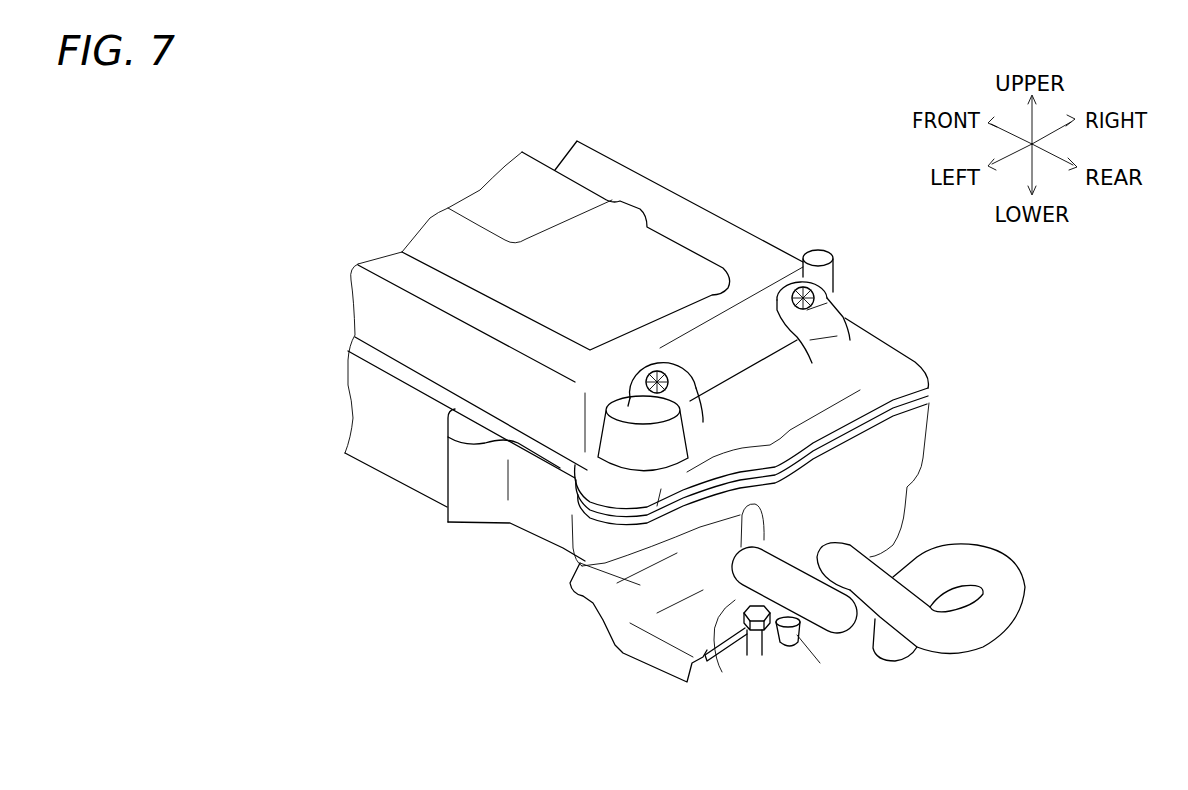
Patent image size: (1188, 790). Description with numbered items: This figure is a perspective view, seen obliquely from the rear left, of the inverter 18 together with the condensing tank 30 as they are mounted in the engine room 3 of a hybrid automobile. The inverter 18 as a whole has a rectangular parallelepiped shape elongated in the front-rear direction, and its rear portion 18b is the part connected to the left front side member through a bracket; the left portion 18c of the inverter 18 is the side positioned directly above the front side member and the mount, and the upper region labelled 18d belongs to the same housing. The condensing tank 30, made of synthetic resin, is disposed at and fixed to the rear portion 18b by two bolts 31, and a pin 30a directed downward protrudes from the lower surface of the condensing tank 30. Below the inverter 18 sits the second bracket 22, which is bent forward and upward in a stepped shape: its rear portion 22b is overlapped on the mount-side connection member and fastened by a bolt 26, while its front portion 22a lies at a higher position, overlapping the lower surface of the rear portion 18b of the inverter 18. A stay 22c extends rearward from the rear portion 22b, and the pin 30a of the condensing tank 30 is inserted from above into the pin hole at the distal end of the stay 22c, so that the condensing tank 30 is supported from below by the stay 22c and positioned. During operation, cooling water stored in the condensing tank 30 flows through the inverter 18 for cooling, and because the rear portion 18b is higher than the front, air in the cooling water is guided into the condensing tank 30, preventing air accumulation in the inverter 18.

The engine room 3 is at (990, 299).
The inverter 18 is at (421, 501).
The rear portion of the inverter 18b is at (740, 330).
The left portion of the inverter 18c is at (380, 450).
The rib of body 18d is at (655, 172).
The second bracket 22 is at (613, 652).
The front portion of the second bracket 22a is at (578, 590).
The rear portion of the second bracket 22b is at (672, 662).
The stay 22c is at (783, 655).
The bolt 26 is at (716, 615).
The condensing tank 30 is at (941, 425).
The pin 30a is at (790, 648).
The bolts 31 is at (650, 370).